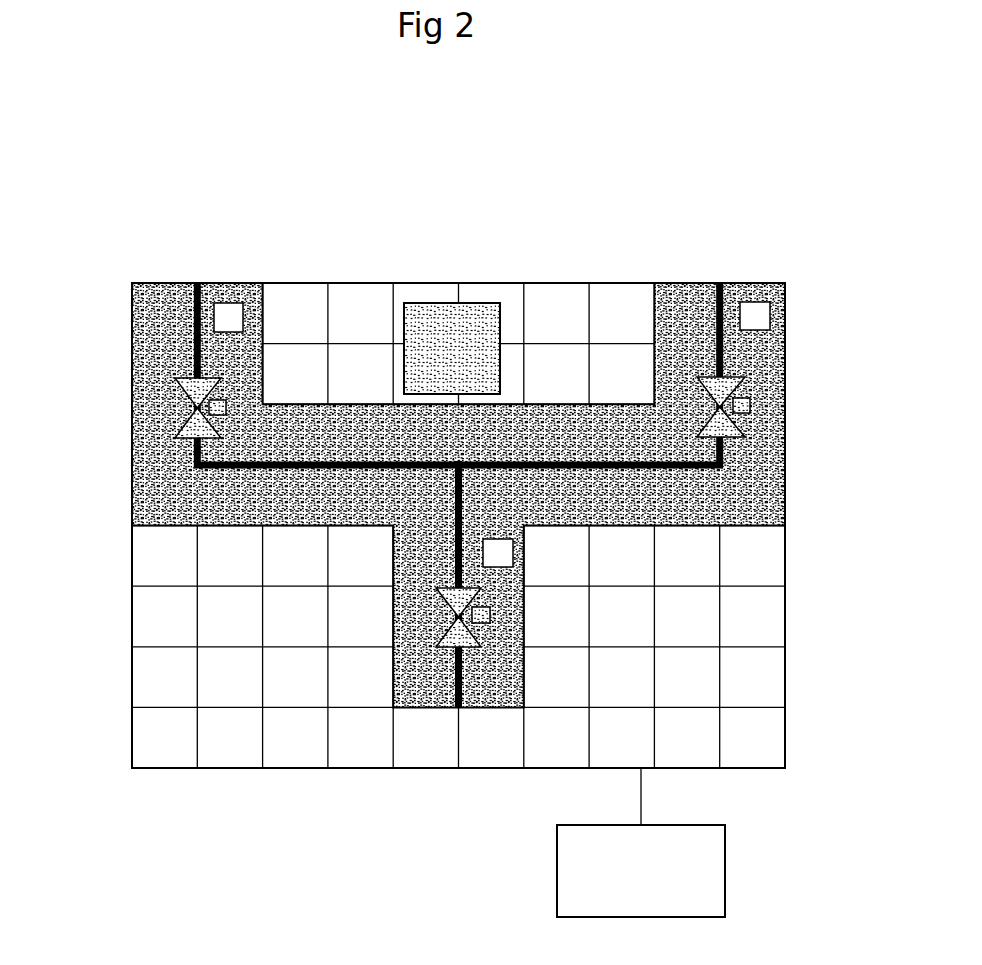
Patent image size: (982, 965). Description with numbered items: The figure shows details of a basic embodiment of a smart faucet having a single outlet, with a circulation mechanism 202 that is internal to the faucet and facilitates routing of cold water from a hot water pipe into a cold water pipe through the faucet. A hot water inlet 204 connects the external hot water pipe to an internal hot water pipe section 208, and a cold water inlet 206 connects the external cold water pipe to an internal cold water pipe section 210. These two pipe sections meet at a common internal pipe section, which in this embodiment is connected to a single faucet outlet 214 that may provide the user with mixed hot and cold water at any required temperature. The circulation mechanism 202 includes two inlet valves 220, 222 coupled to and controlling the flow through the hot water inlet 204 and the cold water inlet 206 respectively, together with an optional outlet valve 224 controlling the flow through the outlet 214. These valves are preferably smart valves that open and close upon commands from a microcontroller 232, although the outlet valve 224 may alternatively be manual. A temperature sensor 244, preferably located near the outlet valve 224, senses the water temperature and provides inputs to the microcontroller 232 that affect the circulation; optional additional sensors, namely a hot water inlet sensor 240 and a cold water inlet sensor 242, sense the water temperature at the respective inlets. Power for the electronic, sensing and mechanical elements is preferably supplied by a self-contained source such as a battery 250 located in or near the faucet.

The circulation mechanism 202 is at (620, 278).
The hot water inlet 204 is at (721, 281).
The cold water inlet 206 is at (197, 281).
The internal hot water pipe section 208 is at (738, 346).
The internal cold water pipe section 210 is at (184, 318).
The single faucet outlet 214 is at (450, 670).
The inlet valve 220 is at (754, 405).
The inlet valve 222 is at (173, 408).
The outlet valve 224 is at (496, 616).
The microcontroller 232 is at (477, 301).
The hot water inlet sensor 240 is at (764, 296).
The cold water inlet sensor 242 is at (233, 296).
The temperature sensor 244 is at (517, 553).
The battery 250 is at (641, 842).